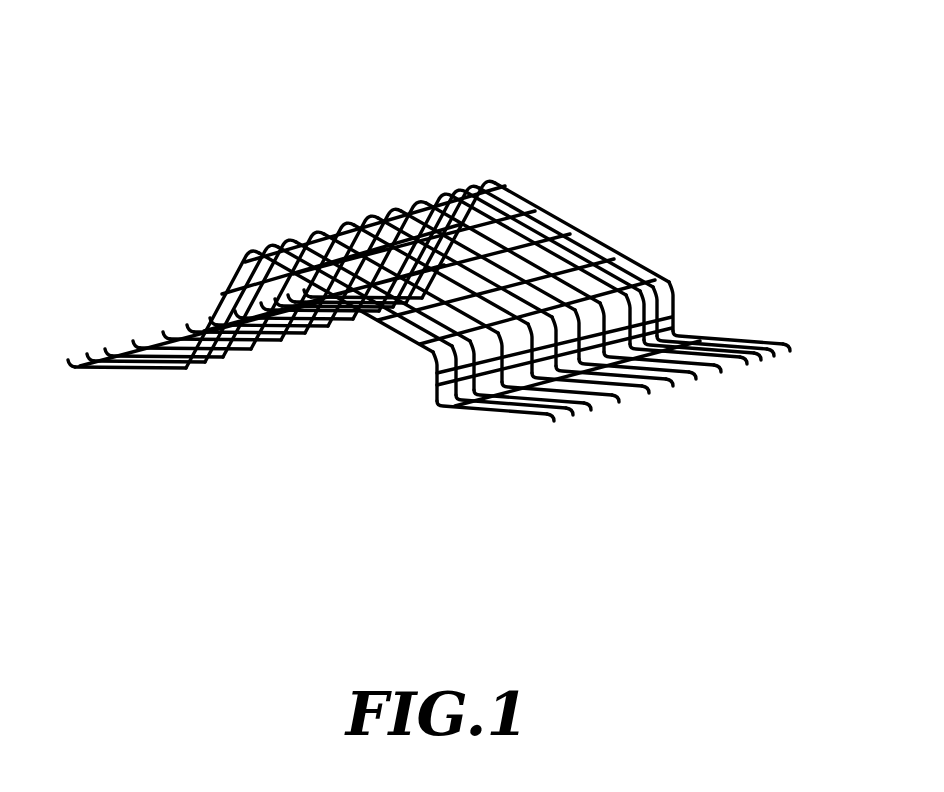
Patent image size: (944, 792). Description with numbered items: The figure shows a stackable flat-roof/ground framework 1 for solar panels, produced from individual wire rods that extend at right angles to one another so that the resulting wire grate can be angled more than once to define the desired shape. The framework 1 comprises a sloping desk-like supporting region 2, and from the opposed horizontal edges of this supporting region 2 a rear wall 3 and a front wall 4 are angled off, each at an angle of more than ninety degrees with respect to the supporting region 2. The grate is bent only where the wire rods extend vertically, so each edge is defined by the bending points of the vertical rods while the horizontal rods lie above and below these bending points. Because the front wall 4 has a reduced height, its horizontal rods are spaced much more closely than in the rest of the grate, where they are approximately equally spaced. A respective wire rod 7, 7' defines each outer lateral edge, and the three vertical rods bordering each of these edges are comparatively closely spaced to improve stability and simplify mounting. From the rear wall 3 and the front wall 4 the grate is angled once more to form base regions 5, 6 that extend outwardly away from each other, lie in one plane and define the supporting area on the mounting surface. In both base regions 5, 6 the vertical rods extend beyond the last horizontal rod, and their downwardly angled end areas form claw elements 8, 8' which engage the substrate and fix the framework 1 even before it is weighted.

The flat-roof/ground framework 1 is at (439, 255).
The supporting region 2 is at (620, 255).
The rear wall 3 is at (227, 288).
The front wall 4 is at (658, 318).
The base region 5 is at (136, 382).
The base region 6 is at (478, 417).
The wire rod 7 is at (390, 308).
The wire rod 7' is at (457, 215).
The claw element 8 is at (178, 313).
The claw element 8' is at (668, 405).